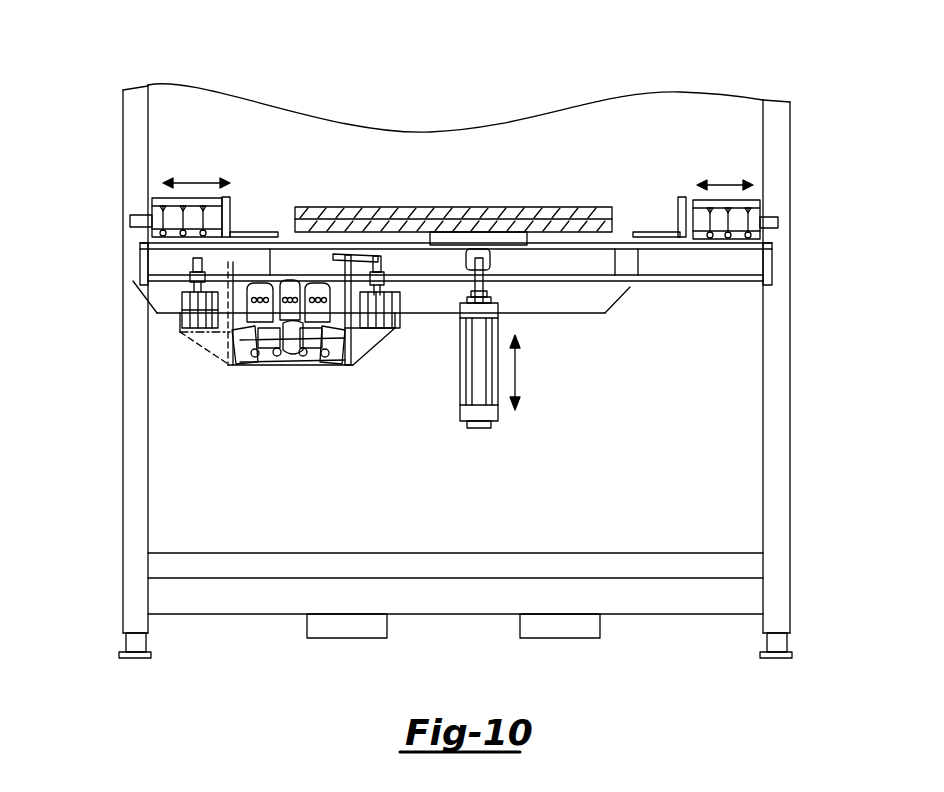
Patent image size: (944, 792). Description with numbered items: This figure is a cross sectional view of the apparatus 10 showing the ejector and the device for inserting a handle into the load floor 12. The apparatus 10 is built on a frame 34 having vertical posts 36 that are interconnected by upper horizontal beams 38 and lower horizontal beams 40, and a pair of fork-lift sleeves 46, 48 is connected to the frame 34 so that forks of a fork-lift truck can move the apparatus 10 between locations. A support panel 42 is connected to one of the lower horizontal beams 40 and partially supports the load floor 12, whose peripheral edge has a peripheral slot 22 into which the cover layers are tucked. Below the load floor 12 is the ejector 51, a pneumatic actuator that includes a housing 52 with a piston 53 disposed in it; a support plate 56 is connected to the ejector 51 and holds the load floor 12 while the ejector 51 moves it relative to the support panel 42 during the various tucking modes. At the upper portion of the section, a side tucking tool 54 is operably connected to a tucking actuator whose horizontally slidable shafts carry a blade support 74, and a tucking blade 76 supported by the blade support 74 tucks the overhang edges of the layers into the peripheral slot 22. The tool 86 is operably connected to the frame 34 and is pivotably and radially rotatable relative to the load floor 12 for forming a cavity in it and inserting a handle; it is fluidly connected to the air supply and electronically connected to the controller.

The apparatus 10 is at (485, 334).
The load floor 12 is at (442, 207).
The peripheral slot 22 is at (377, 217).
The frame 34 is at (122, 414).
The vertical posts 36 is at (775, 352).
The upper horizontal beams 38 is at (720, 282).
The lower horizontal beams 40 is at (458, 567).
The support panel 42 is at (745, 268).
The fork-lift sleeve 46 is at (327, 638).
The fork-lift sleeve 48 is at (540, 638).
The ejector 51 is at (451, 359).
The housing 52 is at (480, 355).
The piston 53 is at (483, 275).
The side tucking tool 54 is at (200, 218).
The support plate 56 is at (503, 240).
The blade support 74 is at (253, 228).
The tucking blade 76 is at (273, 233).
The tool 86 is at (313, 368).